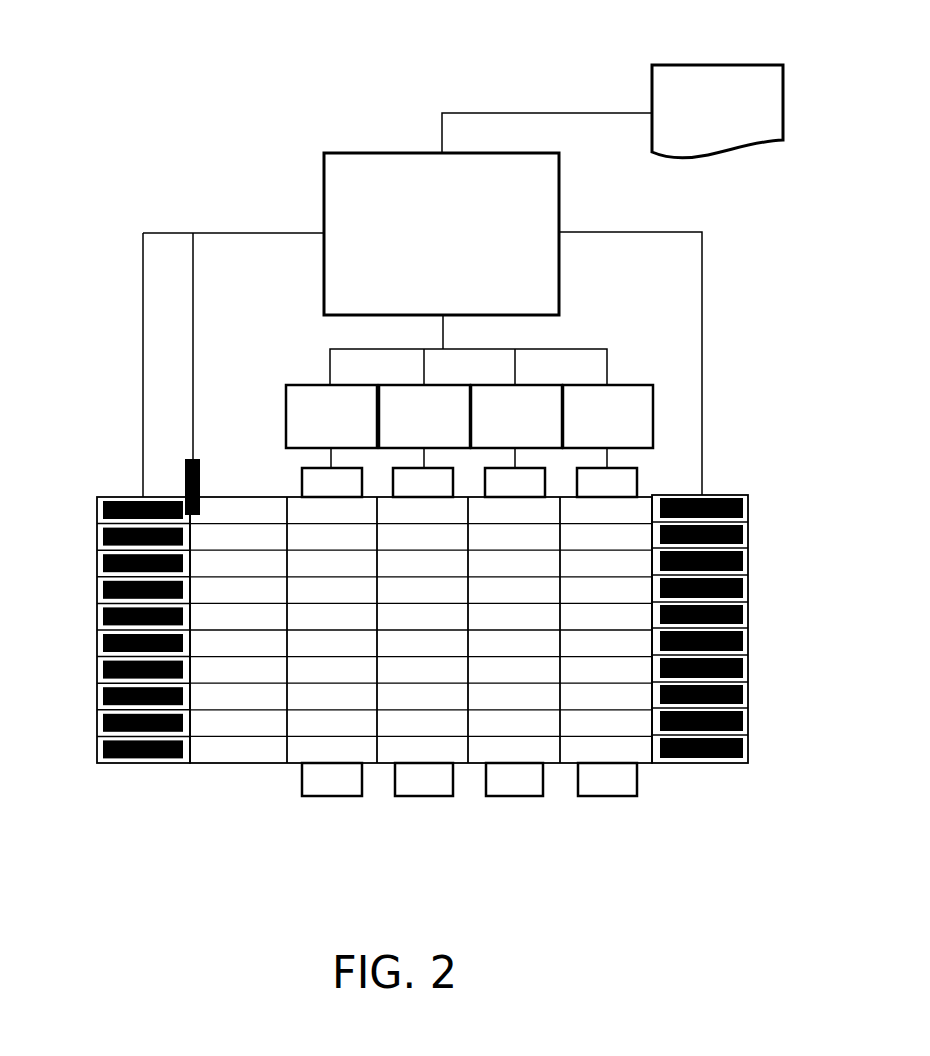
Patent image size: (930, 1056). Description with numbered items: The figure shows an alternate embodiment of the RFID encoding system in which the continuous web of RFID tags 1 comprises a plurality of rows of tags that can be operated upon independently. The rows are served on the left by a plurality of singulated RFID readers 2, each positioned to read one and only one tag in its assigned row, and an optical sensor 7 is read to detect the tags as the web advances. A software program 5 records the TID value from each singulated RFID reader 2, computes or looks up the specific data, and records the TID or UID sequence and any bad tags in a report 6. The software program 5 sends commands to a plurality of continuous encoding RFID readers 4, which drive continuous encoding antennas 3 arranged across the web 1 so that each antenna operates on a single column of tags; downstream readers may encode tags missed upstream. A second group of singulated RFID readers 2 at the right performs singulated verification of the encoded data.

The continuous web of RFID tags 1 is at (245, 718).
The singulated RFID reader 2 is at (132, 773).
The continuous encoding antenna 3 is at (345, 792).
The continuous encoding RFID reader 4 is at (595, 417).
The software program 5 is at (482, 197).
The report of RFID TID or UID sequence and bad tags 6 is at (727, 100).
The optical sensor 7 is at (172, 453).